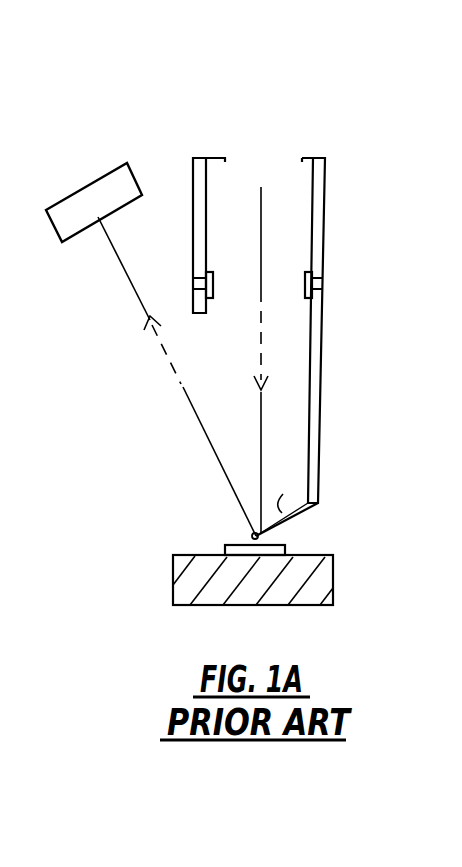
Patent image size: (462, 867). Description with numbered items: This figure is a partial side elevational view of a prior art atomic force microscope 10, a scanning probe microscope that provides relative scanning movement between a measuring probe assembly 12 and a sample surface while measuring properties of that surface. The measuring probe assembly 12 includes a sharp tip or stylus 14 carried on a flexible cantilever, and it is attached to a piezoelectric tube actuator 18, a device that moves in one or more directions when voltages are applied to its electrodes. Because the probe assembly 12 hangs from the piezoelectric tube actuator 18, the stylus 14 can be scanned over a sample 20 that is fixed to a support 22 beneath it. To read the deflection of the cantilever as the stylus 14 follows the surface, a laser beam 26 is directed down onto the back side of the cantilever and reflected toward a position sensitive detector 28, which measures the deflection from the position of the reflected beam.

The atomic force microscope 10 is at (287, 150).
The measuring probe assembly 12 is at (233, 522).
The sharp tip or stylus 14 is at (247, 538).
The piezoelectric tube actuator 18 is at (334, 347).
The sample 20 is at (287, 542).
The support 22 is at (327, 553).
The laser beam 26 is at (262, 255).
The position sensitive detector 28 is at (97, 182).